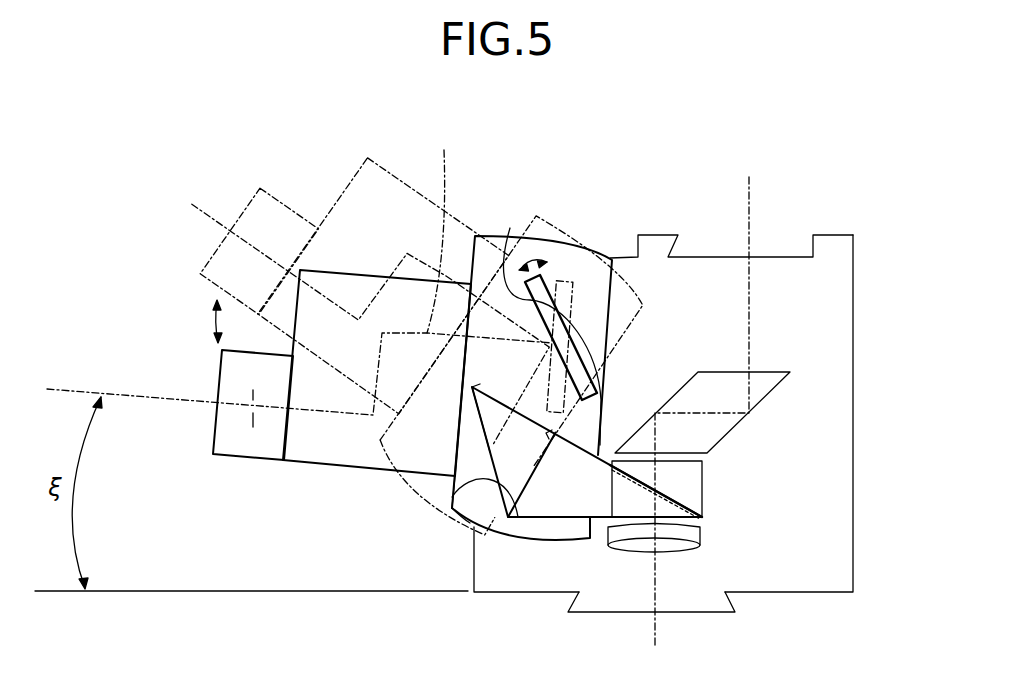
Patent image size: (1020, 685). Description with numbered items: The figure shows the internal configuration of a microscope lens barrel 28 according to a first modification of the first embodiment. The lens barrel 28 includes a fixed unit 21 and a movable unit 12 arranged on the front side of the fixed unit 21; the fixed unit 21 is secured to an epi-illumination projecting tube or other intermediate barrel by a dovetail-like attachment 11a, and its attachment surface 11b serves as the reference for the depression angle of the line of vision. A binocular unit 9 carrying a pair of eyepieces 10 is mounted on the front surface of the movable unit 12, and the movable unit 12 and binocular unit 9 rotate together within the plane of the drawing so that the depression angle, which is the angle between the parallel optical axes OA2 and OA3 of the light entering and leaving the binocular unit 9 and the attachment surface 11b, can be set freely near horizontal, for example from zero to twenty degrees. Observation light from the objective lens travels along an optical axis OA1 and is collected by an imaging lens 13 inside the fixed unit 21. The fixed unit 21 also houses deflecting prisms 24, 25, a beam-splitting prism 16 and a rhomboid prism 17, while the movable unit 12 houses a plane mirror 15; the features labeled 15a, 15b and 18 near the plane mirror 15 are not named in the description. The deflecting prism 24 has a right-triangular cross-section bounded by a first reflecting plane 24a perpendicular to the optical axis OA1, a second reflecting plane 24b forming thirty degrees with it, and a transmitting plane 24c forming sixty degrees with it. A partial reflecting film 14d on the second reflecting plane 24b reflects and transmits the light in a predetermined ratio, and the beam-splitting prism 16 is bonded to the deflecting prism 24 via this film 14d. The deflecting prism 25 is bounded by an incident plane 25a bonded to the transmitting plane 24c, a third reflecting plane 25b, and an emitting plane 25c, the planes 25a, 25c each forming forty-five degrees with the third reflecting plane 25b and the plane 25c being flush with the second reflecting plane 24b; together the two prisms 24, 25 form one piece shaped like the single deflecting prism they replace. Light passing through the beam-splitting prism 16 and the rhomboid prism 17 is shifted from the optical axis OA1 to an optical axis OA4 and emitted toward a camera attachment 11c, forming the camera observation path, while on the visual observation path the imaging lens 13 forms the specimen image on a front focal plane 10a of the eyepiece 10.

The lens barrel 28 is at (818, 150).
The fixed unit 21 is at (860, 432).
The attachment 11a is at (707, 614).
The attachment surface 11b is at (495, 595).
The camera attachment 11c is at (787, 256).
The optical axis OA1 is at (653, 633).
The optical axis OA2 is at (443, 226).
The optical axis OA3 is at (163, 401).
The optical axis OA4 is at (747, 198).
The eyepiece 10 is at (245, 462).
The front focal plane 10a is at (252, 393).
The binocular unit 9 is at (330, 478).
The movable unit 12 is at (548, 228).
The plane mirror 15 is at (600, 348).
The mirror pivot 15a is at (510, 228).
The mirror rotation range 15b is at (556, 322).
The mirror drive 18 is at (533, 266).
The deflecting prism 24 is at (548, 510).
The first reflecting plane 24a is at (575, 520).
The second reflecting plane 24b is at (573, 442).
The transmitting plane 24c is at (507, 520).
The deflecting prism 25 is at (449, 505).
The incident plane 25a is at (470, 523).
The third reflecting plane 25b is at (488, 468).
The emitting plane 25c is at (498, 396).
The rhomboid prism 17 is at (770, 396).
The beam-splitting prism 16 is at (704, 466).
The partial reflecting film 14d is at (704, 502).
The imaging lens 13 is at (702, 535).